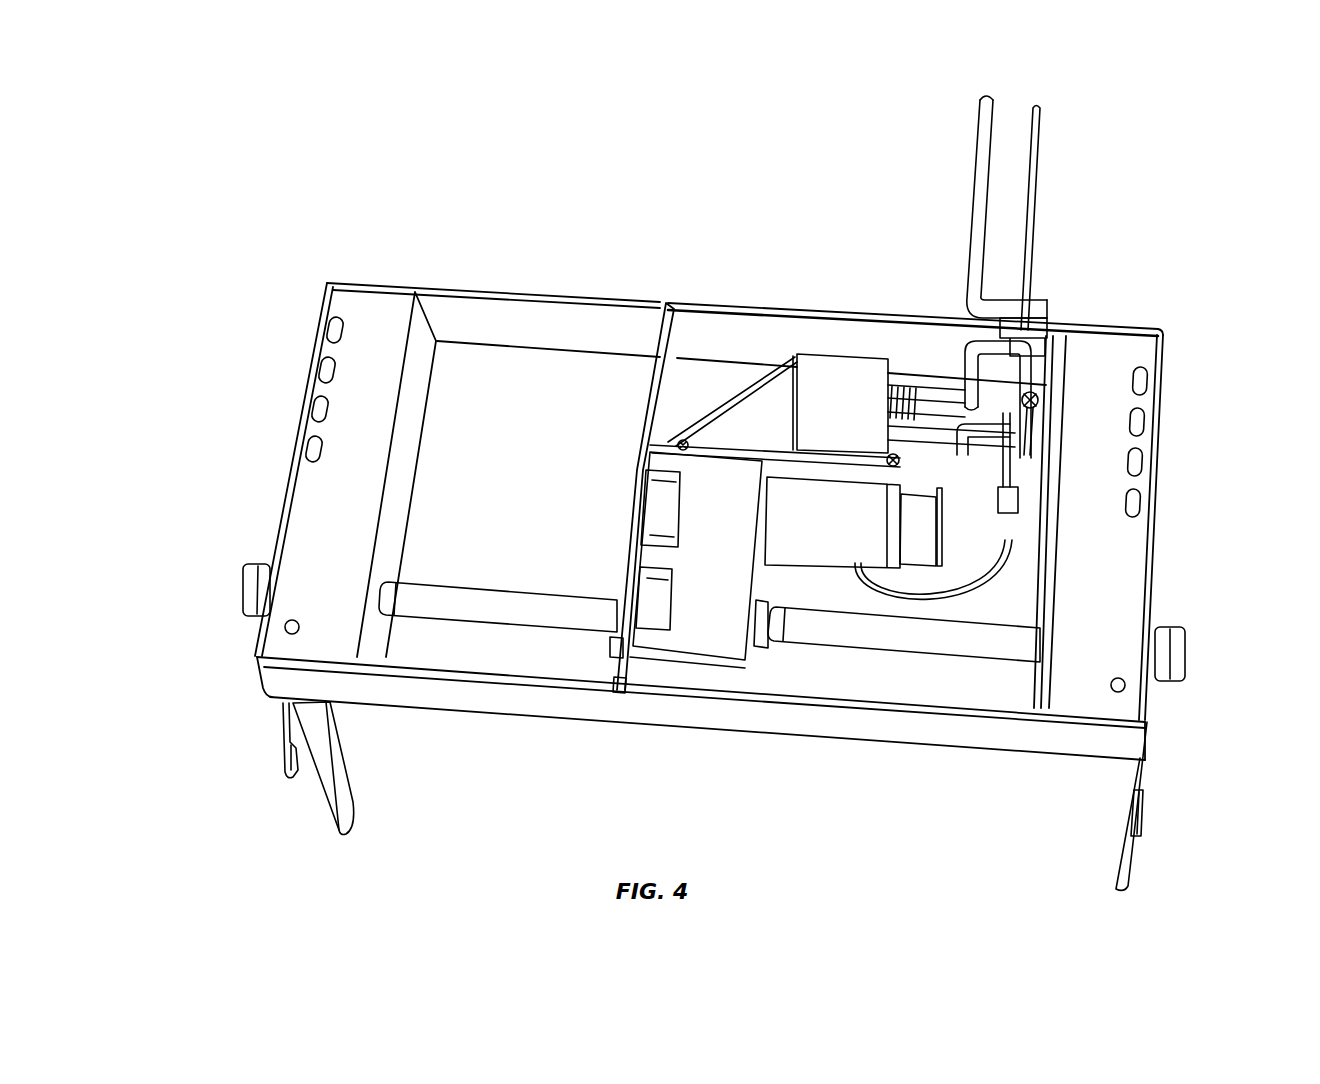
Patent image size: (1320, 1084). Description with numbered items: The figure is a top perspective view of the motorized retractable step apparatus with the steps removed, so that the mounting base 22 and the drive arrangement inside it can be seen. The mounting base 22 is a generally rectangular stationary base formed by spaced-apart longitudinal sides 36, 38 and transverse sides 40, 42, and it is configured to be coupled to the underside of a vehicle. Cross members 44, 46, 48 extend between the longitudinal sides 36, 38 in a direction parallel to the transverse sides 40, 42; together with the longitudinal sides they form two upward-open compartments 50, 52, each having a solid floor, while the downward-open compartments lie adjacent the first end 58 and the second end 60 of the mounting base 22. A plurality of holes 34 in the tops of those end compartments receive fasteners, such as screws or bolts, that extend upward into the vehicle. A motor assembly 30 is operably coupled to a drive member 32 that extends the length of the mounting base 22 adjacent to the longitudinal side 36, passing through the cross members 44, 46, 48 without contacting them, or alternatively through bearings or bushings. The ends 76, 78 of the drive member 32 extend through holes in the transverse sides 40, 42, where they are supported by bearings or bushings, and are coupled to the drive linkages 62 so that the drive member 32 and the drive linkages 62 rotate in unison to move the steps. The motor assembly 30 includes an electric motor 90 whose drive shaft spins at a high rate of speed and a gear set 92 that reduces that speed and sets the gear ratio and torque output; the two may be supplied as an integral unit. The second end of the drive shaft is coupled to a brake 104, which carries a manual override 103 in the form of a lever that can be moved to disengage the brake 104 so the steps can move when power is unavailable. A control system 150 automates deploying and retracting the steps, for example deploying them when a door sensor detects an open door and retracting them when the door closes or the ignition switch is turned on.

The mounting base 22 is at (1028, 743).
The motor assembly 30 is at (834, 425).
The drive member 32 is at (890, 643).
The holes 34 is at (342, 332).
The longitudinal side 36 is at (703, 720).
The longitudinal side 38 is at (738, 318).
The transverse side 40 is at (1157, 555).
The transverse side 42 is at (288, 480).
The cross member 44 is at (1063, 353).
The cross member 46 is at (671, 343).
The cross member 48 is at (406, 472).
The compartment 50 is at (921, 359).
The compartment 52 is at (517, 375).
The first end 58 is at (1216, 527).
The second end 60 is at (244, 469).
The drive linkage 62 is at (341, 778).
The end of drive member 76 is at (1199, 666).
The end of drive member 78 is at (233, 583).
The electric motor 90 is at (822, 500).
The gear set 92 is at (731, 580).
The manual override 103 is at (940, 489).
The brake 104 is at (917, 545).
The control system 150 is at (845, 368).